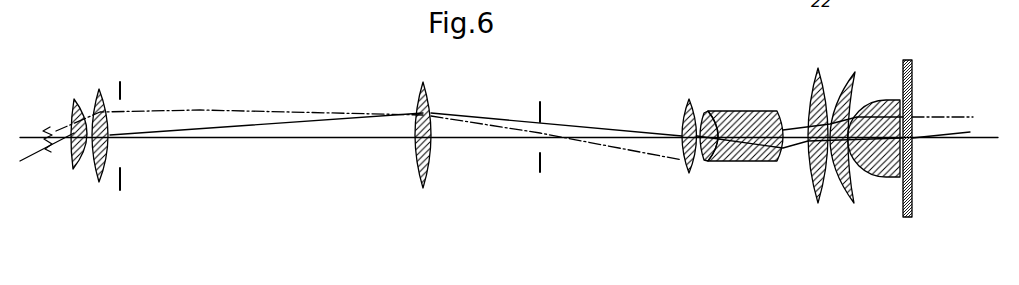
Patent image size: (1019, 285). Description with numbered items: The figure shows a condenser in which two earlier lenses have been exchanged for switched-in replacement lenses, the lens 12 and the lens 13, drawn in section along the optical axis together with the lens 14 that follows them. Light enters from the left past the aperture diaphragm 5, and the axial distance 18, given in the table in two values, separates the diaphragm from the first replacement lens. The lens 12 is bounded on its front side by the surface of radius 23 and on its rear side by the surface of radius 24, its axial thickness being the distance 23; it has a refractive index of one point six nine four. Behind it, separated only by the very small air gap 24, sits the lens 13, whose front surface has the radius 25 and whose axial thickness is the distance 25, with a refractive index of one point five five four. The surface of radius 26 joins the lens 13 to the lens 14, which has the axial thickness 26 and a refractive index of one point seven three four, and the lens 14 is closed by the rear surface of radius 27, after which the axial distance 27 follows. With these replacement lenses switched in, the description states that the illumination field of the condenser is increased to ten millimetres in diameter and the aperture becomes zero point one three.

The lens 12 is at (689, 173).
The lens 13 is at (714, 160).
The lens 14 is at (752, 161).
The axial distance 18 is at (617, 138).
The aperture diaphragm 5 is at (538, 162).
The surface radius and axial thickness 23 is at (670, 200).
The surface radius and axial distance 24 is at (699, 188).
The surface radius and axial thickness 25 is at (735, 197).
The surface radius and axial thickness 26 is at (768, 190).
The surface radius and axial distance 27 is at (817, 225).